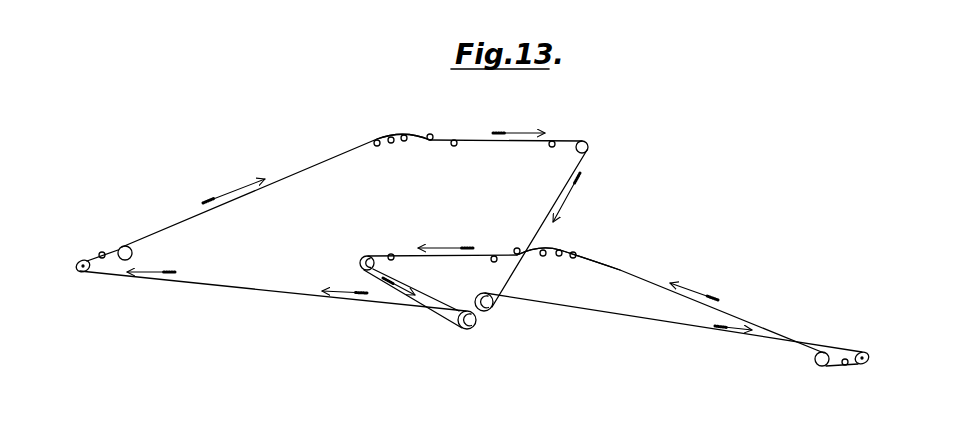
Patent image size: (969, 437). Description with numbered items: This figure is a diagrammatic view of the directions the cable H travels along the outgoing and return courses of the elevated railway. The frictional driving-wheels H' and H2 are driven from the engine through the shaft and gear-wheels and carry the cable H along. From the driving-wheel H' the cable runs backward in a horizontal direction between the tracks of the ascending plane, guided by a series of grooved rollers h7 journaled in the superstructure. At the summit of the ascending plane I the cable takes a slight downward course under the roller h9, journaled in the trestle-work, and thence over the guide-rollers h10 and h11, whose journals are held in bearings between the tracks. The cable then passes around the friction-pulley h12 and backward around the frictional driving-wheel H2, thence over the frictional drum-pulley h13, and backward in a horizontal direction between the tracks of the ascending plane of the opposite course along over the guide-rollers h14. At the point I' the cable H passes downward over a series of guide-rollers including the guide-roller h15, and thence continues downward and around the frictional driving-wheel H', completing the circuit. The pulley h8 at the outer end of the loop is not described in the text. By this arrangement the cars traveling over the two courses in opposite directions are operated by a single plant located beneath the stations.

The cable H is at (471, 249).
The frictional driving-wheel H' is at (426, 306).
The frictional driving-wheel H2 is at (495, 302).
The ascending plane I is at (403, 127).
The point I' is at (568, 249).
The grooved rollers h7 is at (404, 142).
The end pulley h8 is at (83, 259).
The roller h9 is at (430, 133).
The guide-roller h10 is at (454, 147).
The guide-roller h11 is at (552, 148).
The friction-pulley h12 is at (580, 153).
The frictional drum-pulley h13 is at (862, 350).
The guide-rollers h14 is at (575, 265).
The guide-roller h15 is at (517, 247).